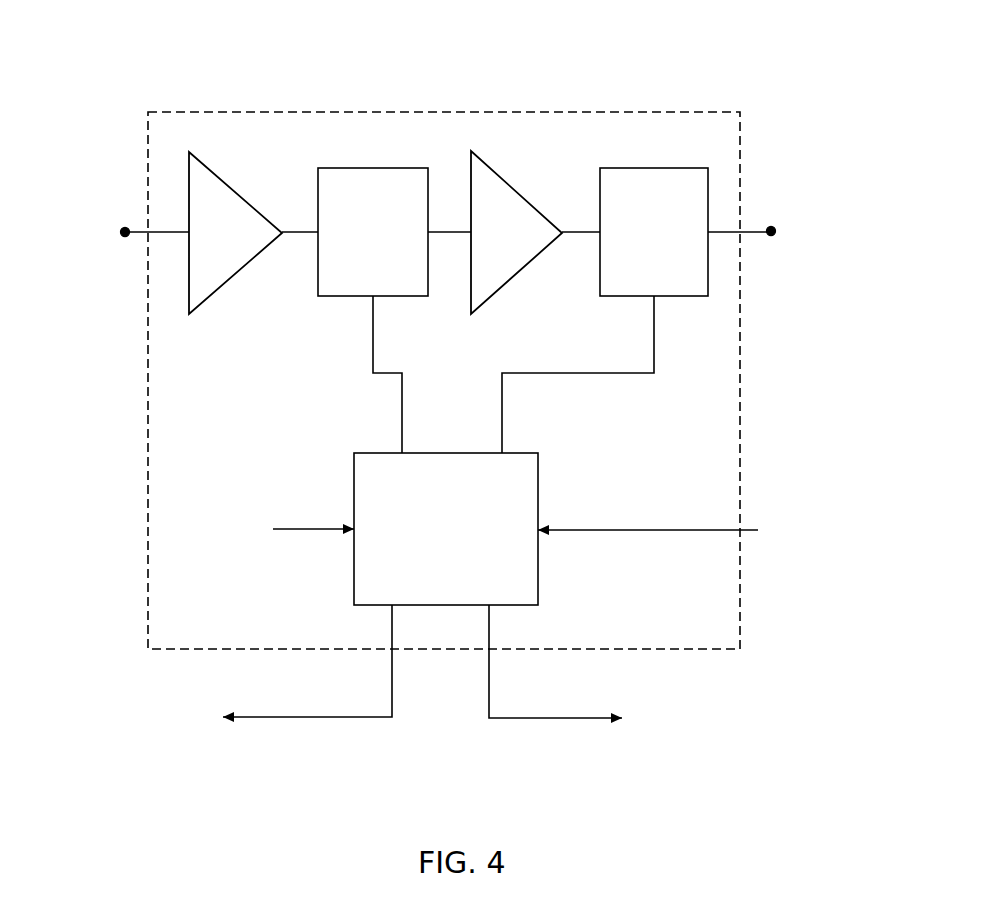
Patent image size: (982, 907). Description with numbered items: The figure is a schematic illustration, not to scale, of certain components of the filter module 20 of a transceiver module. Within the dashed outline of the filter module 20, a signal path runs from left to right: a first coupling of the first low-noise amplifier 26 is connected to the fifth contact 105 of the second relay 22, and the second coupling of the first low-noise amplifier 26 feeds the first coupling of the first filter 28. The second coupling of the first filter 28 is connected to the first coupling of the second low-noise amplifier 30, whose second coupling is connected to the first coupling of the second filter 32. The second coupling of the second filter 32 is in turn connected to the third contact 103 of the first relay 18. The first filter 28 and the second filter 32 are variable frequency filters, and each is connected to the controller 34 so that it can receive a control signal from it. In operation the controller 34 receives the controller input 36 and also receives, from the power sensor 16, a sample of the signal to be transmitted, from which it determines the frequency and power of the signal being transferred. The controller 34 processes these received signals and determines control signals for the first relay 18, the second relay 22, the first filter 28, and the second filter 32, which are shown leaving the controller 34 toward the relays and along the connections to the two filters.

The filter module 20 is at (743, 638).
The fifth contact 105 is at (125, 228).
The third contact 103 is at (771, 227).
The first low-noise amplifier 26 is at (253, 233).
The first filter 28 is at (394, 310).
The second low-noise amplifier 30 is at (535, 232).
The second filter 32 is at (605, 310).
The controller 34 is at (446, 529).
The controller input 36 is at (290, 527).
The power sensor 16 is at (684, 531).
The first relay 18 is at (582, 667).
The second relay 22 is at (280, 666).